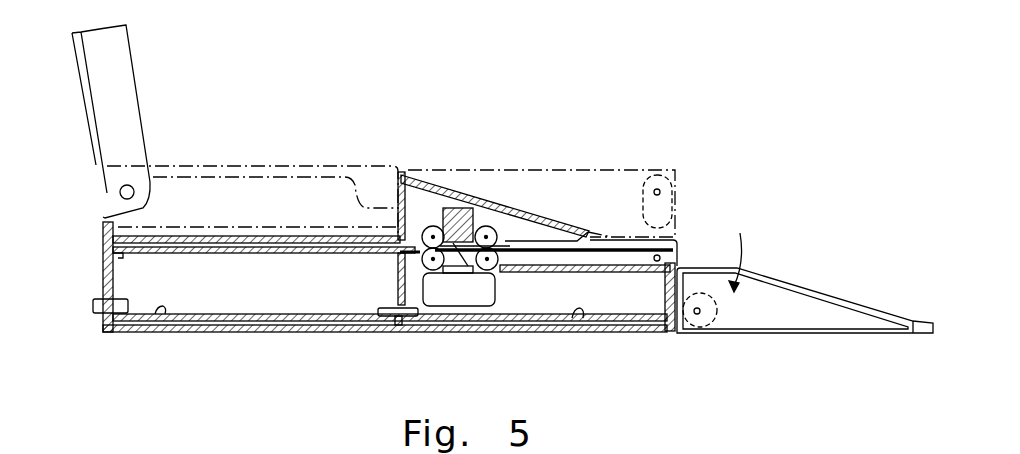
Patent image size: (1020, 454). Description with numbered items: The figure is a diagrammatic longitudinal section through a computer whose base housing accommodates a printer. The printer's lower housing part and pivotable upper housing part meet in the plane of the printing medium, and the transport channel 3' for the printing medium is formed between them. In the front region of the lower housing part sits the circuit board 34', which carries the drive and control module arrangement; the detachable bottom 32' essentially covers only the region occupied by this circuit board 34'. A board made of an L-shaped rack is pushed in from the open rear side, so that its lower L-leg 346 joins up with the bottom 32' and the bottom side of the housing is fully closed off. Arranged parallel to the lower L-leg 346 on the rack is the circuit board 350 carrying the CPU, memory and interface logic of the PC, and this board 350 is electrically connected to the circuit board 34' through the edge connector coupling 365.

The transport channel 3' is at (648, 183).
The circuit board 350 is at (160, 333).
The lower L-leg 346 is at (242, 334).
The edge connector coupling 365 is at (397, 335).
The detachable bottom 32' is at (390, 353).
The circuit board 34' is at (584, 350).